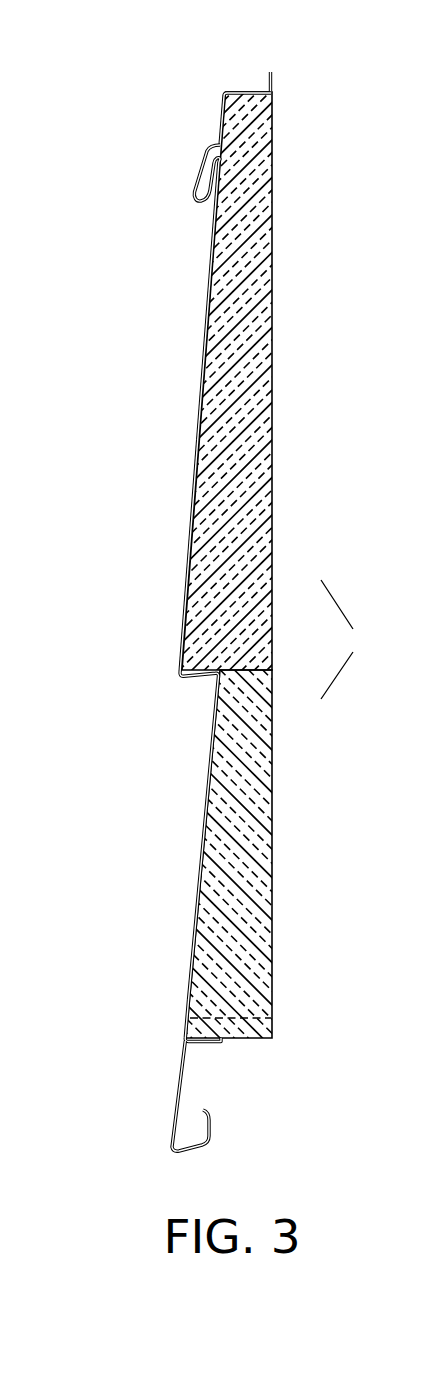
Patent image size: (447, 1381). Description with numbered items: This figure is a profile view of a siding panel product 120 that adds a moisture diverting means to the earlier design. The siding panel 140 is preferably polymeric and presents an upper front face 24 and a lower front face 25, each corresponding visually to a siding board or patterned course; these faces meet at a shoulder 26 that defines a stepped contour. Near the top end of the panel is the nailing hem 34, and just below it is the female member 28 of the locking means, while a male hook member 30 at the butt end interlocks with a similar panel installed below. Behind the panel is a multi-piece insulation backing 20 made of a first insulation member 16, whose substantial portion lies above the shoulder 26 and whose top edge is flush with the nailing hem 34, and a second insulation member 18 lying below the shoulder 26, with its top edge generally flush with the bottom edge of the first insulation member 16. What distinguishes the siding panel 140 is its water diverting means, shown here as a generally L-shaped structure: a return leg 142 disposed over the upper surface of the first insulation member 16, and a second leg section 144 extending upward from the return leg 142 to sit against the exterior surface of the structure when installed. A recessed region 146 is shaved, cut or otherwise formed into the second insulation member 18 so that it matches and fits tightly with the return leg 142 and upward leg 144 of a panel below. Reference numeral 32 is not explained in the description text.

The first insulation member 16 is at (273, 401).
The second insulation member 18 is at (273, 815).
The insulation backing 20 is at (352, 639).
The upper front face 24 is at (202, 412).
The lower front face 25 is at (202, 862).
The shoulder 26 is at (177, 677).
The female member 28 is at (200, 168).
The male hook member 30 is at (197, 1155).
The bottom wrap of skin 32 is at (192, 1034).
The nailing hem 34 is at (222, 120).
The siding panel product 120 is at (148, 500).
The siding panel 140 is at (187, 597).
The return leg 142 is at (240, 91).
The second leg section 144 is at (264, 85).
The recessed region 146 is at (241, 1040).